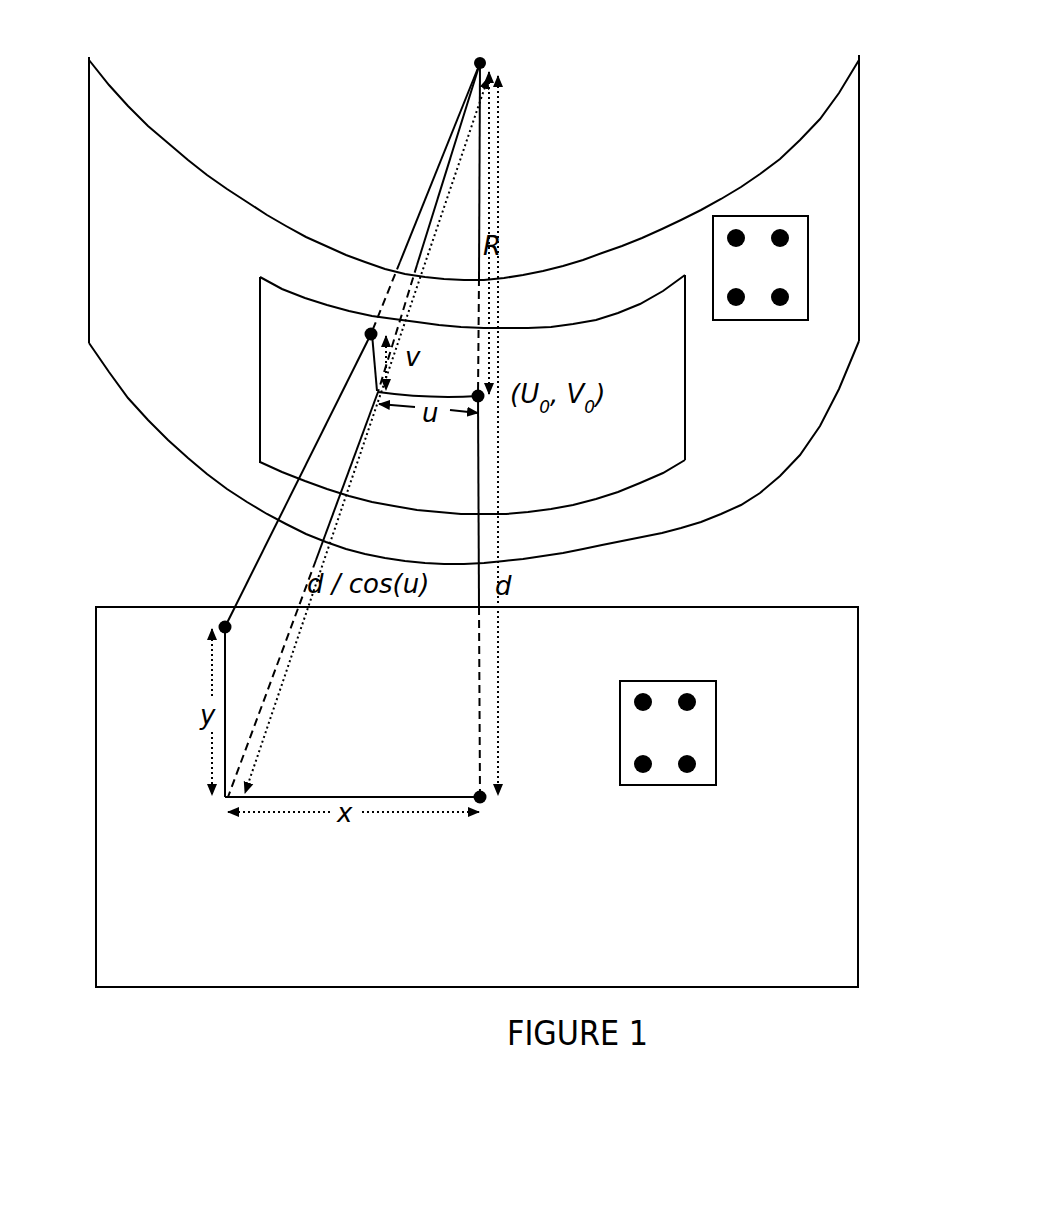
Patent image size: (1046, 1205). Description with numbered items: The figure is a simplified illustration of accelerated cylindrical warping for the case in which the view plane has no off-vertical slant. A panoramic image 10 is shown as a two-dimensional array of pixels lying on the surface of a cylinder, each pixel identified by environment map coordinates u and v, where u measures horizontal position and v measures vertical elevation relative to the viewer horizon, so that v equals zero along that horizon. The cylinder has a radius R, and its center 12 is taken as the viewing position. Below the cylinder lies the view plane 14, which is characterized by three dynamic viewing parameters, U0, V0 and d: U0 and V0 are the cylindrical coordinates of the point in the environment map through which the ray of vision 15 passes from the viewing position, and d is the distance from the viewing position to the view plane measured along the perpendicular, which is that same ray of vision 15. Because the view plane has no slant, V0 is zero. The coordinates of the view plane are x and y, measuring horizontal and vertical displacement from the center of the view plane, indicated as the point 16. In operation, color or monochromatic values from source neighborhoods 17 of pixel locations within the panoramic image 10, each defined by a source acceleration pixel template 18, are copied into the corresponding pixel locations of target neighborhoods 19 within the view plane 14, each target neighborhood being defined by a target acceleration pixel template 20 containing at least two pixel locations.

The panoramic image 10 is at (862, 224).
The center of the cylinder 12 is at (476, 62).
The view plane 14 is at (95, 632).
The ray of vision 15 is at (478, 495).
The center of the view plane 16 is at (484, 800).
The source neighborhood 17 is at (774, 268).
The source acceleration pixel template 18 is at (762, 217).
The target neighborhood 19 is at (692, 733).
The target acceleration pixel template 20 is at (677, 681).